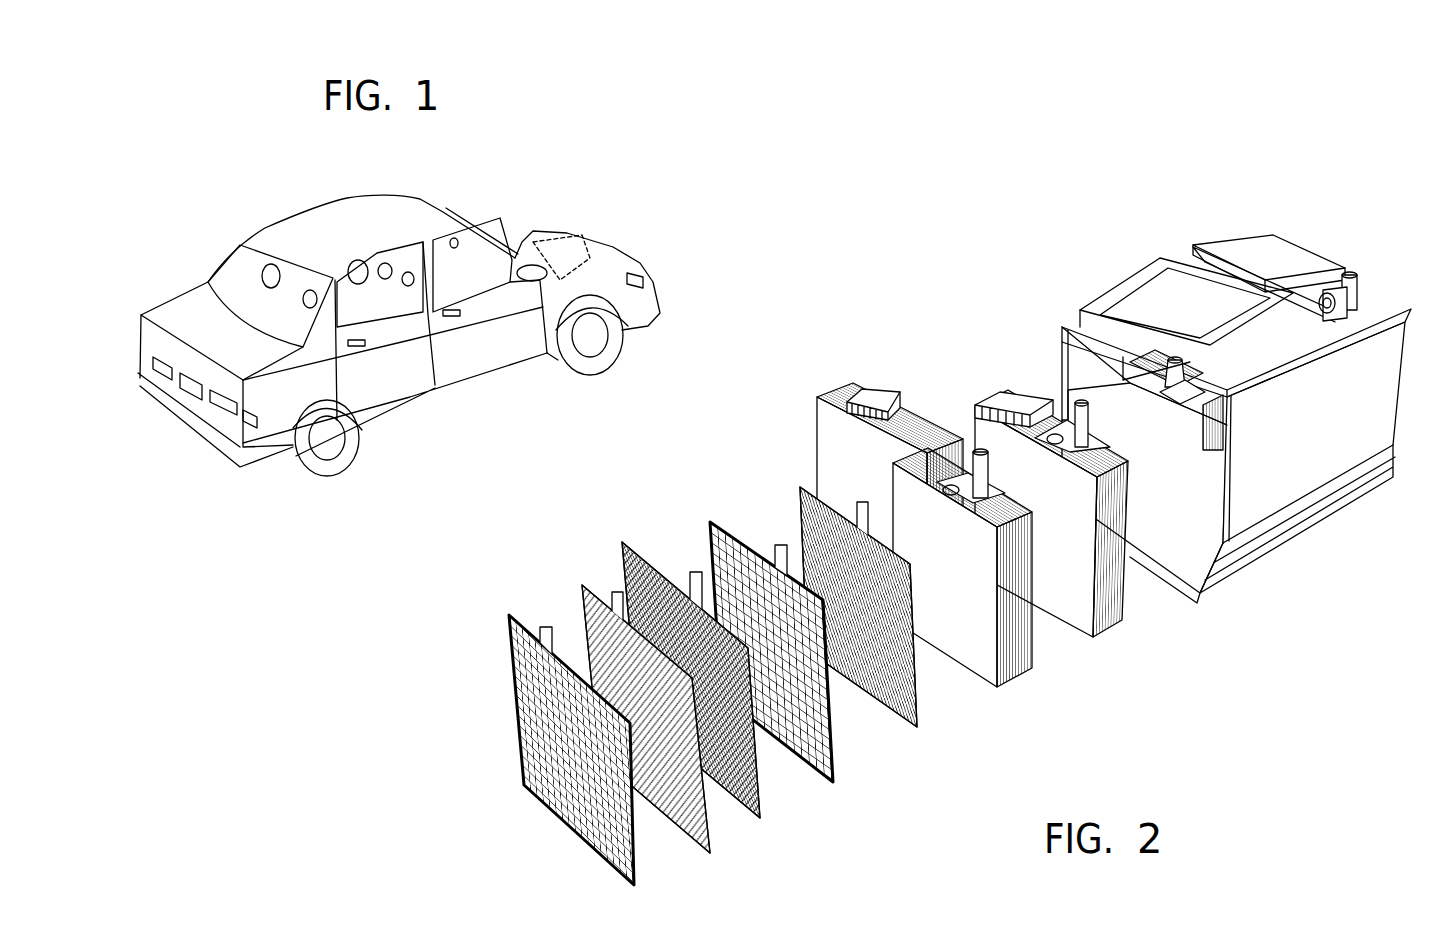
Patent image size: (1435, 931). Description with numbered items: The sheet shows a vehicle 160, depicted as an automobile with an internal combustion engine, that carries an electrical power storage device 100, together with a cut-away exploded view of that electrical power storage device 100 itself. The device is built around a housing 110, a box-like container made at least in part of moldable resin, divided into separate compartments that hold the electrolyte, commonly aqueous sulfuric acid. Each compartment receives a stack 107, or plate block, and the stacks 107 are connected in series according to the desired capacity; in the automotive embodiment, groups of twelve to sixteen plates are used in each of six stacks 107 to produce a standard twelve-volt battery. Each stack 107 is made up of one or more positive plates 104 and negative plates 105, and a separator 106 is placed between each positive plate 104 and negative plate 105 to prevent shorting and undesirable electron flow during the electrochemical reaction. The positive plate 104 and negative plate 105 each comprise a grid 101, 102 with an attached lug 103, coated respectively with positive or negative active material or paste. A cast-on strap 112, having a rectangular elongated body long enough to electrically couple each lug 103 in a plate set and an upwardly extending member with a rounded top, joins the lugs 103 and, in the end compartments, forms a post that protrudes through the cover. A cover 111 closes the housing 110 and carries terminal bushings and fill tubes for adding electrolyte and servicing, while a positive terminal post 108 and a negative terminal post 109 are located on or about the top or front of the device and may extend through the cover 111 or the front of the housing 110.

In FIG. 1, the electrical power storage device 100 is at (528, 232).
In FIG. 2, the electrical power storage device 100 is at (916, 285).
In FIG. 1, the vehicle 160 is at (622, 180).
In FIG. 2, the grid 101 is at (567, 826).
In FIG. 2, the grid 102 is at (810, 757).
In FIG. 2, the lug 103 is at (903, 393).
In FIG. 2, the positive plate 104 is at (665, 818).
In FIG. 2, the negative plate 105 is at (893, 722).
In FIG. 2, the separator 106 is at (618, 542).
In FIG. 2, the stack 107 is at (830, 428).
In FIG. 2, the positive terminal post 108 is at (1125, 298).
In FIG. 2, the negative terminal post 109 is at (1346, 270).
In FIG. 2, the housing 110 is at (1282, 478).
In FIG. 2, the cover 111 is at (1068, 420).
In FIG. 2, the cast-on strap 112 is at (957, 488).